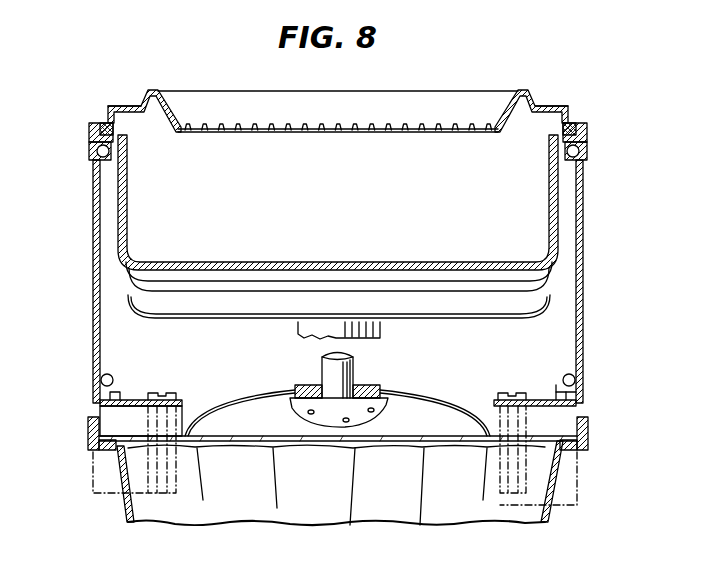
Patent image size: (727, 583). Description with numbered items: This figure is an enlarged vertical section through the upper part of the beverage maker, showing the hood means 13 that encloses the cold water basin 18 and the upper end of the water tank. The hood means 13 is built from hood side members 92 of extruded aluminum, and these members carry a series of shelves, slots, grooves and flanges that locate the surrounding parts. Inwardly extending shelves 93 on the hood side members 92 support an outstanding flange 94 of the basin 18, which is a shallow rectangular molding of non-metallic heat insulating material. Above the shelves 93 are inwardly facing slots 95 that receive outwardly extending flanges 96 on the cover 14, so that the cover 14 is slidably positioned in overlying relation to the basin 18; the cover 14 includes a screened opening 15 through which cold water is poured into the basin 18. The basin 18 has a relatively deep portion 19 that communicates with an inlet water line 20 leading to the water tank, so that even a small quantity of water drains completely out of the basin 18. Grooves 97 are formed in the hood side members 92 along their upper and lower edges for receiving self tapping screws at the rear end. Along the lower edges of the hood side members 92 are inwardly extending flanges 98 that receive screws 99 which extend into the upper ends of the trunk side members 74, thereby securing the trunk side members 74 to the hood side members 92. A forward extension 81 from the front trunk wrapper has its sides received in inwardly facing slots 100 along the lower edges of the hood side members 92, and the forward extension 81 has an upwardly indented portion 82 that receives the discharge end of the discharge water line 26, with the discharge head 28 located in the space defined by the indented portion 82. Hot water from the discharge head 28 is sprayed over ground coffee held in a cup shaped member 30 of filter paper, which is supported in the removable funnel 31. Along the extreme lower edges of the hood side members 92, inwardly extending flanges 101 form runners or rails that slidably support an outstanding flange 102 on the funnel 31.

The hood means 13 is at (652, 110).
The cover 14 is at (551, 108).
The screened opening 15 is at (453, 128).
The basin 18 is at (562, 205).
The relatively deep portion 19 is at (546, 312).
The inlet water line 20 is at (383, 330).
The discharge water line 26 is at (350, 371).
The discharge head 28 is at (368, 416).
The cup shaped member 30 is at (455, 512).
The funnel 31 is at (548, 521).
The trunk side members 74 is at (115, 487).
The forward extension 81 is at (565, 418).
The upwardly indented portion 82 is at (445, 420).
The hood side members 92 is at (93, 270).
The shelves 93 is at (98, 142).
The outstanding flange 94 is at (98, 130).
The slots 95 is at (108, 124).
The outwardly extending flanges 96 is at (118, 107).
The grooves 97 is at (95, 160).
The inwardly extending flanges 98 is at (133, 400).
The screws 99 is at (165, 392).
The inwardly facing slots 100 is at (95, 437).
The inwardly extending flanges 101 is at (98, 450).
The outstanding flange 102 is at (118, 446).